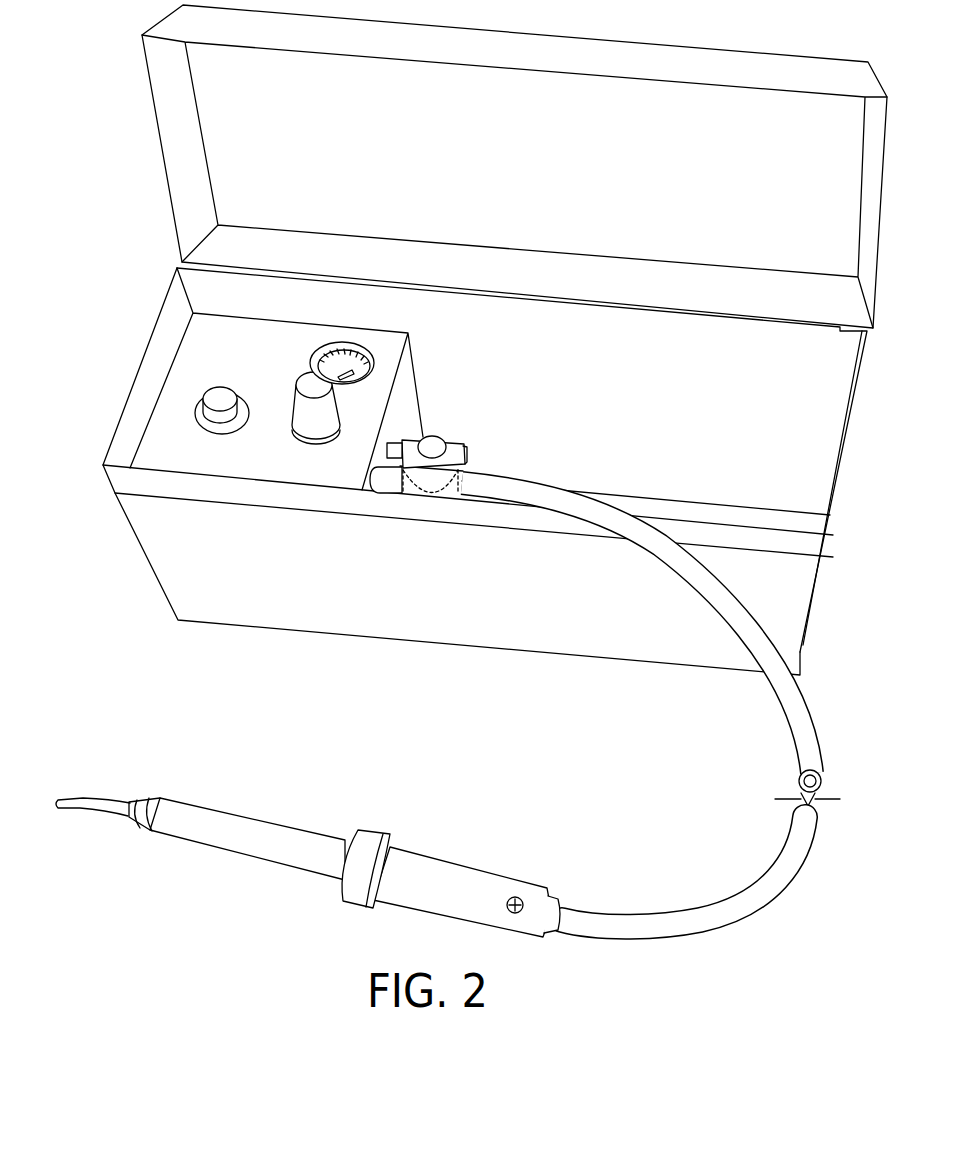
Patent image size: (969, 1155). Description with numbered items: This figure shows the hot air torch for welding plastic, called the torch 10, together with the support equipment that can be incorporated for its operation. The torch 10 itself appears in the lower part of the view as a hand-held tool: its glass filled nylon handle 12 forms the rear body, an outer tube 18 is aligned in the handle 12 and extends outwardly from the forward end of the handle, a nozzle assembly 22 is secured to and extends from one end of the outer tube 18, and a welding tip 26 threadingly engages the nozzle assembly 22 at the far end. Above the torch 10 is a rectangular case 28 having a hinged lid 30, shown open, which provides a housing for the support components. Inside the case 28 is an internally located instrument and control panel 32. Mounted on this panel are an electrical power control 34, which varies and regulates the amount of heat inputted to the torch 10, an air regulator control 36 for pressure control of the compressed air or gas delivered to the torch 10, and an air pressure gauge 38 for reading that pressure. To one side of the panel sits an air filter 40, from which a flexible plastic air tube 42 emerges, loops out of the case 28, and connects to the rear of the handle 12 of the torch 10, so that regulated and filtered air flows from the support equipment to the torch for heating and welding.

The torch 10 is at (460, 471).
The handle 12 is at (403, 860).
The outer tube 18 is at (240, 820).
The nozzle assembly 22 is at (143, 820).
The welding tip 26 is at (90, 802).
The rectangular case 28 is at (172, 562).
The hinged lid 30 is at (187, 173).
The instrument and control panel 32 is at (170, 442).
The electrical power control 34 is at (223, 397).
The air regulator control 36 is at (313, 383).
The air pressure gauge 38 is at (345, 350).
The air filter 40 is at (433, 445).
The flexible plastic air tube 42 is at (800, 702).